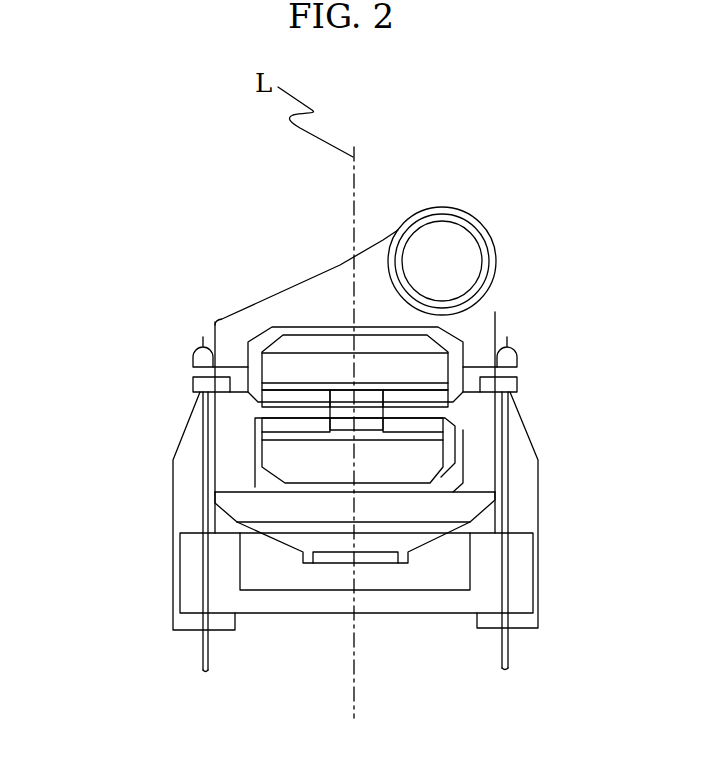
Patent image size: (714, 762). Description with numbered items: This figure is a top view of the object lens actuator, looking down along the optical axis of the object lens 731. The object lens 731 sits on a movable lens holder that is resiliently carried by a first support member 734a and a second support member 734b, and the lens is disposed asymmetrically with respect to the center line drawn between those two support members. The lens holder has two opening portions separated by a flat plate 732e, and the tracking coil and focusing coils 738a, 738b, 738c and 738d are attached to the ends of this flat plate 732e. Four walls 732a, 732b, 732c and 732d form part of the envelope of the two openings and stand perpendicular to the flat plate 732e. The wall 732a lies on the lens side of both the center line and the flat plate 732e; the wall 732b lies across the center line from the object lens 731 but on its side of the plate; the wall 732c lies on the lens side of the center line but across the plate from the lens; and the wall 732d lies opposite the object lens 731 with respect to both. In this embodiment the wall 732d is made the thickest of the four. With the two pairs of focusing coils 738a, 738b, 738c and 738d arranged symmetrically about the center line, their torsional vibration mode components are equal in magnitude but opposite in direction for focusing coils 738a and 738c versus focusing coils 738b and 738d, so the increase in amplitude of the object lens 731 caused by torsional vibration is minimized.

The object lens 731 is at (447, 256).
The wall 732a is at (483, 368).
The wall 732b is at (228, 383).
The wall 732c is at (418, 428).
The wall 732d is at (294, 425).
The flat plate 732e is at (314, 412).
The first support member 734a is at (527, 433).
The second support member 734b is at (185, 437).
The focusing coil 738a is at (417, 392).
The focusing coil 738b is at (287, 397).
The focusing coil 738c is at (478, 462).
The focusing coil 738d is at (237, 468).